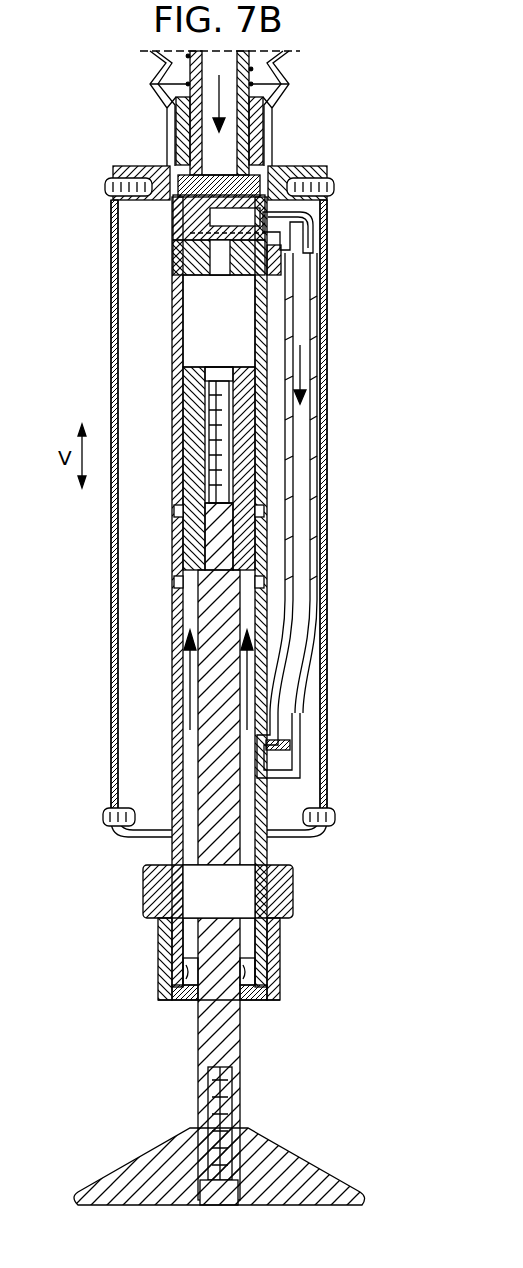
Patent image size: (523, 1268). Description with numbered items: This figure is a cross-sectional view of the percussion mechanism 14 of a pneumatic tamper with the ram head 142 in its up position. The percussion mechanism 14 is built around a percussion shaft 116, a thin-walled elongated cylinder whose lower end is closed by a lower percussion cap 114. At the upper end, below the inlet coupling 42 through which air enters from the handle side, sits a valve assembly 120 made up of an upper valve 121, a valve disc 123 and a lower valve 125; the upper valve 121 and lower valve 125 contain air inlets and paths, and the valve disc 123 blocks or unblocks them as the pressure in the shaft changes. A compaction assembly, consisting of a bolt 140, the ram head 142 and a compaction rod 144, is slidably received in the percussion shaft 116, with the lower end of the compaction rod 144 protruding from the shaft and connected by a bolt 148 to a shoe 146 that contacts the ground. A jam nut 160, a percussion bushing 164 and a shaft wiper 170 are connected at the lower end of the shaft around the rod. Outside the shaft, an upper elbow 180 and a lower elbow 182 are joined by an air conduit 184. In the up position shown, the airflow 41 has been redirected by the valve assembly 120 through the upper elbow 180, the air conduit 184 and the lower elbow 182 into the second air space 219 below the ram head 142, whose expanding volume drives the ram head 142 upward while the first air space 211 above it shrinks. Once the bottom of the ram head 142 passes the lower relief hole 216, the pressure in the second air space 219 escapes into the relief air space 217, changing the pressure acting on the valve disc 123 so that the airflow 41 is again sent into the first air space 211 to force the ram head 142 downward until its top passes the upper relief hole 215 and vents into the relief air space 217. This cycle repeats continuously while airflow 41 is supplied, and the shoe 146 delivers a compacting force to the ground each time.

The percussion mechanism 14 is at (404, 488).
The airflow 41 is at (252, 72).
The inlet coupling 42 is at (240, 138).
The lower percussion cap 114 is at (272, 994).
The percussion shaft 116 is at (175, 325).
The valve assembly 120 is at (185, 215).
The upper valve 121 is at (232, 195).
The valve disc 123 is at (175, 258).
The lower valve 125 is at (300, 260).
The bolt 140 is at (185, 377).
The ram head 142 is at (247, 437).
The compaction rod 144 is at (215, 857).
The shoe 146 is at (310, 1175).
The bolt 148 is at (226, 1082).
The jam nut 160 is at (287, 883).
The percussion bushing 164 is at (190, 960).
The shaft wiper 170 is at (262, 960).
The upper elbow 180 is at (306, 222).
The lower elbow 182 is at (286, 771).
The air conduit 184 is at (297, 506).
The first air space 211 is at (242, 290).
The upper relief hole 215 is at (175, 511).
The lower relief hole 216 is at (175, 582).
The relief air space 217 is at (130, 705).
The second air space 219 is at (190, 769).